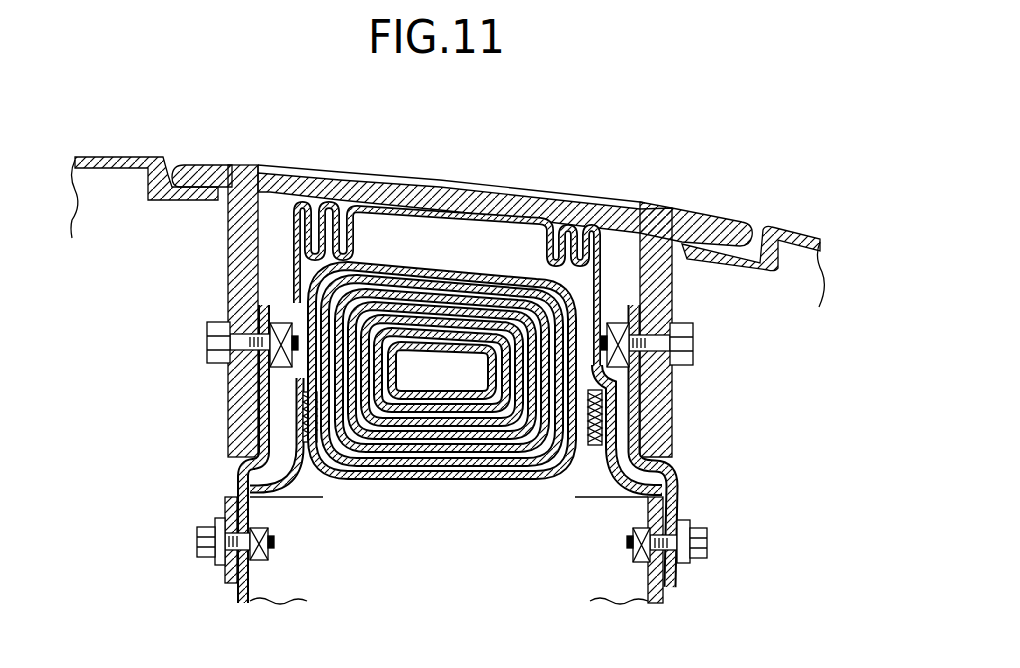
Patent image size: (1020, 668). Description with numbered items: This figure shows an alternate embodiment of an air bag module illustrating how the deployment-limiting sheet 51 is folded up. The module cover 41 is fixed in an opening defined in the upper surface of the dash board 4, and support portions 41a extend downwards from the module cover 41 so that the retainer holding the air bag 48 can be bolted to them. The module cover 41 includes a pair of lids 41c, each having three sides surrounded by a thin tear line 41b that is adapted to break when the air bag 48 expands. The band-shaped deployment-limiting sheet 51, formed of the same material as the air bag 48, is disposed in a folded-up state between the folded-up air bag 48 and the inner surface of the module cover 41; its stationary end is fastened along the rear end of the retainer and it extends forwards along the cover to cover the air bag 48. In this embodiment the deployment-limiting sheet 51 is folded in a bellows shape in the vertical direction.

The dash board 4 is at (120, 158).
The module cover 41 is at (242, 165).
The support portions 41a is at (228, 424).
The tear line 41b is at (446, 188).
The lids 41c is at (379, 177).
The air bag 48 is at (450, 480).
The deployment-limiting sheet 51 is at (418, 218).